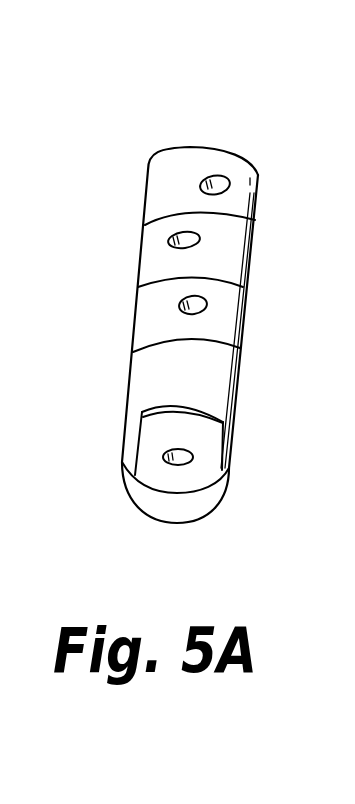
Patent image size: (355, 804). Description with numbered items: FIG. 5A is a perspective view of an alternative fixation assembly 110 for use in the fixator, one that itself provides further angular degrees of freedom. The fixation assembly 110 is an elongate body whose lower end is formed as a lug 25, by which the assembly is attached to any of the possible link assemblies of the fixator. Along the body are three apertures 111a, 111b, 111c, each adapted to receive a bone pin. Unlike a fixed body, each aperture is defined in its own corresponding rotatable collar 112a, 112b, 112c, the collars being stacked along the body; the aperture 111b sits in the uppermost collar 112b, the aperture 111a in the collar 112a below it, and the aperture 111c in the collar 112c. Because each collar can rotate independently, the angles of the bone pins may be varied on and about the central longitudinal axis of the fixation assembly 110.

The fixation assembly 110 is at (157, 123).
The aperture 111a is at (182, 238).
The aperture 111b is at (222, 181).
The aperture 111c is at (182, 305).
The rotatable collar 112a is at (232, 270).
The rotatable collar 112b is at (162, 181).
The rotatable collar 112c is at (233, 327).
The lug 25 is at (147, 498).